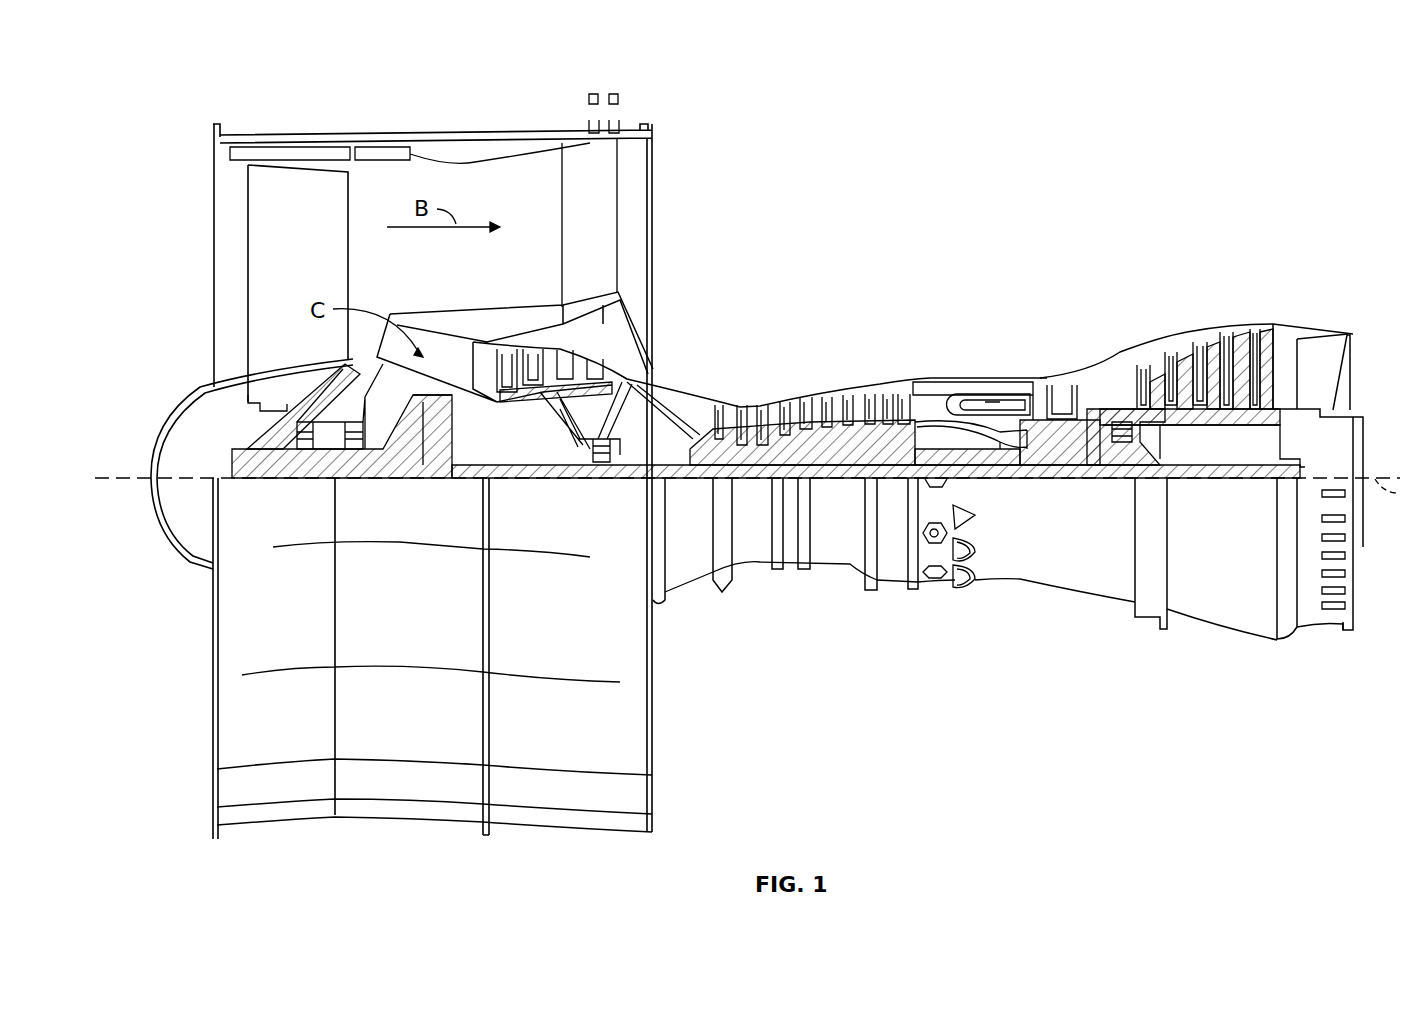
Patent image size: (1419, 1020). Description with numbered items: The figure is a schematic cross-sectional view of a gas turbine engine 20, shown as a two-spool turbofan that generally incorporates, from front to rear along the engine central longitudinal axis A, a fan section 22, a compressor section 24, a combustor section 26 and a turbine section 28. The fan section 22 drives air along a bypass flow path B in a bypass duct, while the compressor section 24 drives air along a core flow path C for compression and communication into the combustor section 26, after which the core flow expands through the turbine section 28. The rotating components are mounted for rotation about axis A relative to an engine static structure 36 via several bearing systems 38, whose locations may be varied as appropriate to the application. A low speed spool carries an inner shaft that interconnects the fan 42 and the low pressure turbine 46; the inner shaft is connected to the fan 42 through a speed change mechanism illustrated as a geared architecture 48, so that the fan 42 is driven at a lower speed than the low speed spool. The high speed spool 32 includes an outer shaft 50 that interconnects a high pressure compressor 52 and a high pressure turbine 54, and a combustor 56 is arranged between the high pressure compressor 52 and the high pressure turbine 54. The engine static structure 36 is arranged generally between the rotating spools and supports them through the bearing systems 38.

The gas turbine engine 20 is at (1247, 133).
The fan section 22 is at (269, 131).
The compressor section 24 is at (753, 235).
The combustor section 26 is at (933, 235).
The turbine section 28 is at (1141, 263).
The high speed spool 32 is at (578, 358).
The engine static structure 36 is at (847, 484).
The bearing systems 38 is at (302, 447).
The fan 42 is at (313, 262).
The low pressure turbine 46 is at (1215, 332).
The geared architecture 48 is at (435, 463).
The outer shaft 50 is at (1003, 455).
The high pressure compressor 52 is at (813, 440).
The high pressure turbine 54 is at (1060, 380).
The combustor 56 is at (985, 407).